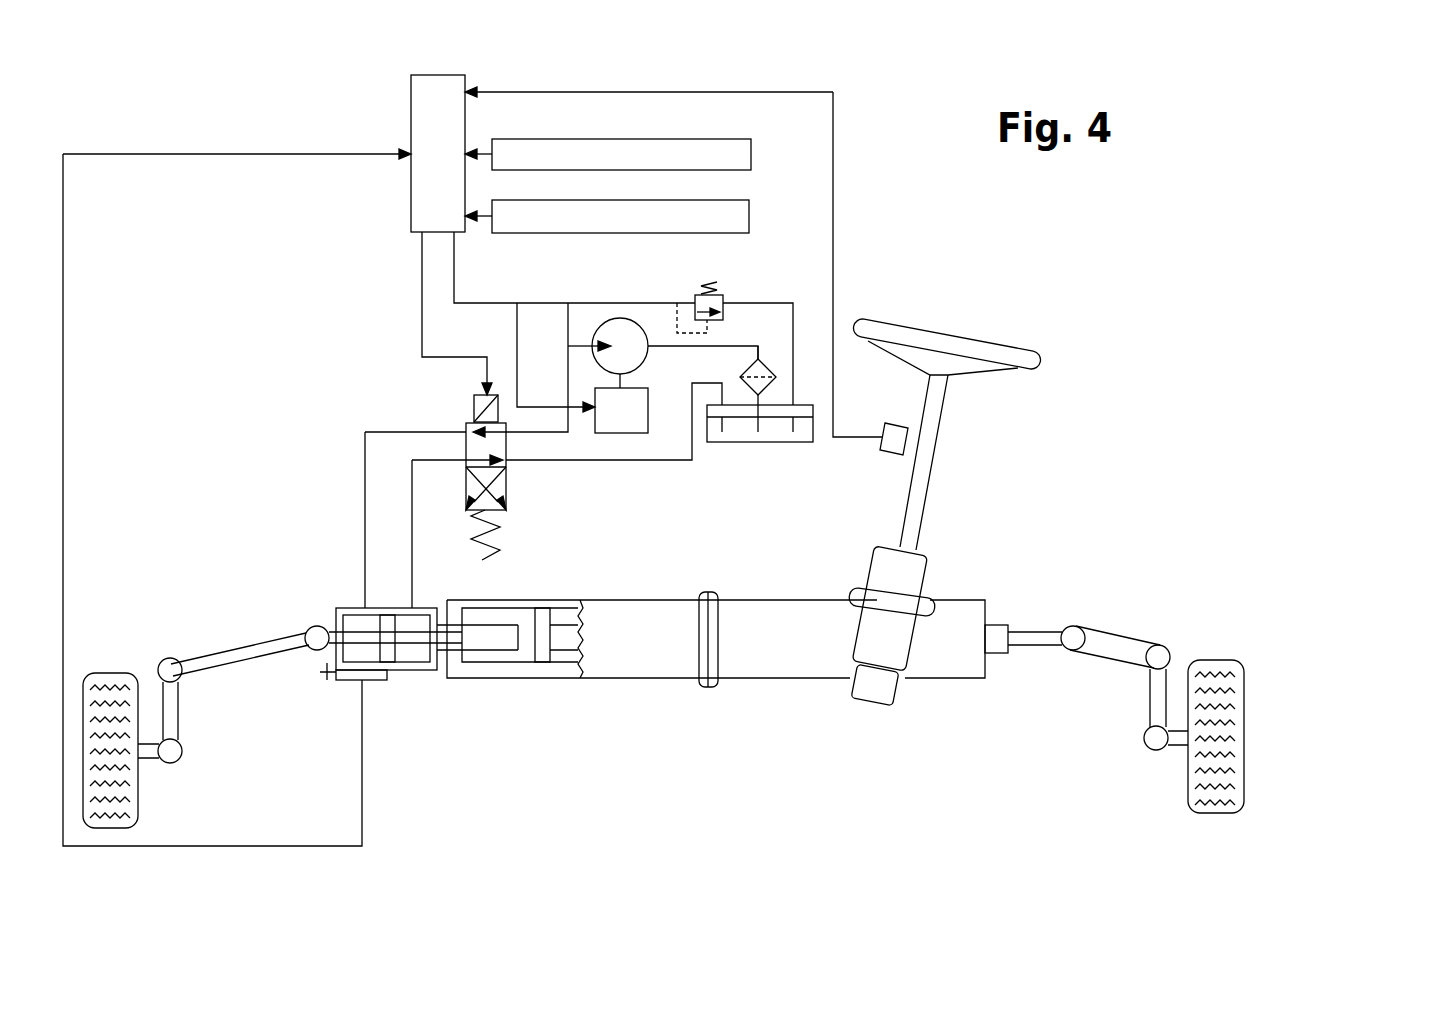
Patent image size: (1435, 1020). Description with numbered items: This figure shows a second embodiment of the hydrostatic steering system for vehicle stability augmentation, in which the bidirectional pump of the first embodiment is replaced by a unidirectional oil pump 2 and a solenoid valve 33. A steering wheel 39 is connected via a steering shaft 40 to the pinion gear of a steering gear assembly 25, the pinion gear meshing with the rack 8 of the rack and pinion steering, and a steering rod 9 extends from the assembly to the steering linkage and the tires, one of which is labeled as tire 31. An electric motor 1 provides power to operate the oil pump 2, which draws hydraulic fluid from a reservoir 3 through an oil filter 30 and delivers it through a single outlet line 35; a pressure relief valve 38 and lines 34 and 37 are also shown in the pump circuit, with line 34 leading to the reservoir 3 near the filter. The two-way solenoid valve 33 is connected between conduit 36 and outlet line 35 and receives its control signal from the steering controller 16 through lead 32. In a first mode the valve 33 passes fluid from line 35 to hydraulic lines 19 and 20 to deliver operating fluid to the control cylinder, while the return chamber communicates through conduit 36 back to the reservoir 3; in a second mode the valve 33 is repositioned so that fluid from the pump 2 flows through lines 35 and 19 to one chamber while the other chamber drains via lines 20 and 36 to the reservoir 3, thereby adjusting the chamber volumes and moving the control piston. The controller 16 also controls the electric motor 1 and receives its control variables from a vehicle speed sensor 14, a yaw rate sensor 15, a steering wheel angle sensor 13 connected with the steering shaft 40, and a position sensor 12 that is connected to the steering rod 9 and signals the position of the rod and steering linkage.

The electric motor 1 is at (618, 433).
The oil pump 2 is at (600, 330).
The reservoir 3 is at (735, 432).
The rack 8 is at (570, 638).
The steering rod 9 is at (467, 638).
The position sensor 12 is at (372, 682).
The steering wheel angle sensor 13 is at (898, 443).
The vehicle speed sensor 14 is at (751, 148).
The yaw rate sensor 15 is at (749, 210).
The steering controller 16 is at (411, 86).
The hydraulic line 19 is at (413, 567).
The hydraulic line 20 is at (362, 557).
The steering gear assembly 25 is at (958, 665).
The oil filter 30 is at (763, 370).
The tire 31 is at (1212, 677).
The lead 32 is at (422, 318).
The solenoid valve 33 is at (507, 505).
The hydraulic line 34 is at (757, 328).
The outlet line 35 is at (568, 393).
The conduit 36 is at (553, 460).
The control signal line 37 is at (747, 303).
The pressure relief valve 38 is at (733, 272).
The steering wheel 39 is at (937, 342).
The steering shaft 40 is at (908, 517).